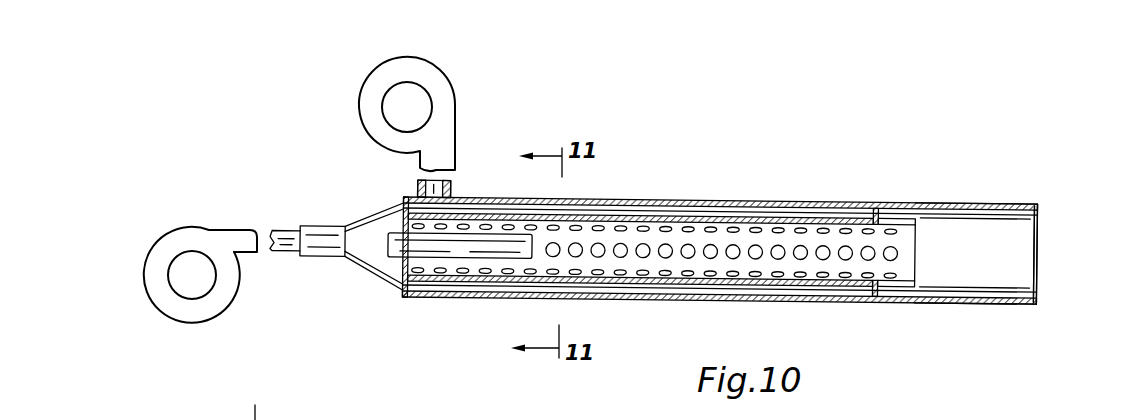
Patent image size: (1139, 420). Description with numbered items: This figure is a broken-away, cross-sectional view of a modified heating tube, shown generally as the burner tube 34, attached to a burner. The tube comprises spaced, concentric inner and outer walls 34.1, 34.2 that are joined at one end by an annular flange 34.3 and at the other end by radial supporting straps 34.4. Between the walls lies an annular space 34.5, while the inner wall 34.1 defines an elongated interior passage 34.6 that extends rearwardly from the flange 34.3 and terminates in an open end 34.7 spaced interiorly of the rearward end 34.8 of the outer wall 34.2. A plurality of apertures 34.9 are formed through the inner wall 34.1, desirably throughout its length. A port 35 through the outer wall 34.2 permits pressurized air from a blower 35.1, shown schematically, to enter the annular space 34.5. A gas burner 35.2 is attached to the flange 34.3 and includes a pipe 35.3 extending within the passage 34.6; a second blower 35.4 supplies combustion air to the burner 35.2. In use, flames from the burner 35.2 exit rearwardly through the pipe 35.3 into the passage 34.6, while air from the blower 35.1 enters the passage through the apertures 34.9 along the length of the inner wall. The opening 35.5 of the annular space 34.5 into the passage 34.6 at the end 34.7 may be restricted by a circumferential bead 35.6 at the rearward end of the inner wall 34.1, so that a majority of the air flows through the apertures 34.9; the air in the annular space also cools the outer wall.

The burner tube 34 is at (772, 125).
The inner wall 34.1 is at (875, 205).
The outer wall 34.2 is at (820, 203).
The annular flange 34.3 is at (405, 290).
The radial supporting straps 34.4 is at (903, 205).
The annular space 34.5 is at (803, 290).
The interior passage 34.6 is at (658, 237).
The open end 34.7 is at (918, 283).
The rearward end 34.8 is at (1039, 271).
The apertures 34.9 is at (680, 276).
The port 35 is at (450, 187).
The blower 35.1 is at (447, 97).
The gas burner 35.2 is at (325, 228).
The pipe 35.3 is at (487, 247).
The second blower 35.4 is at (225, 307).
The opening 35.5 is at (940, 217).
The circumferential bead 35.6 is at (917, 220).